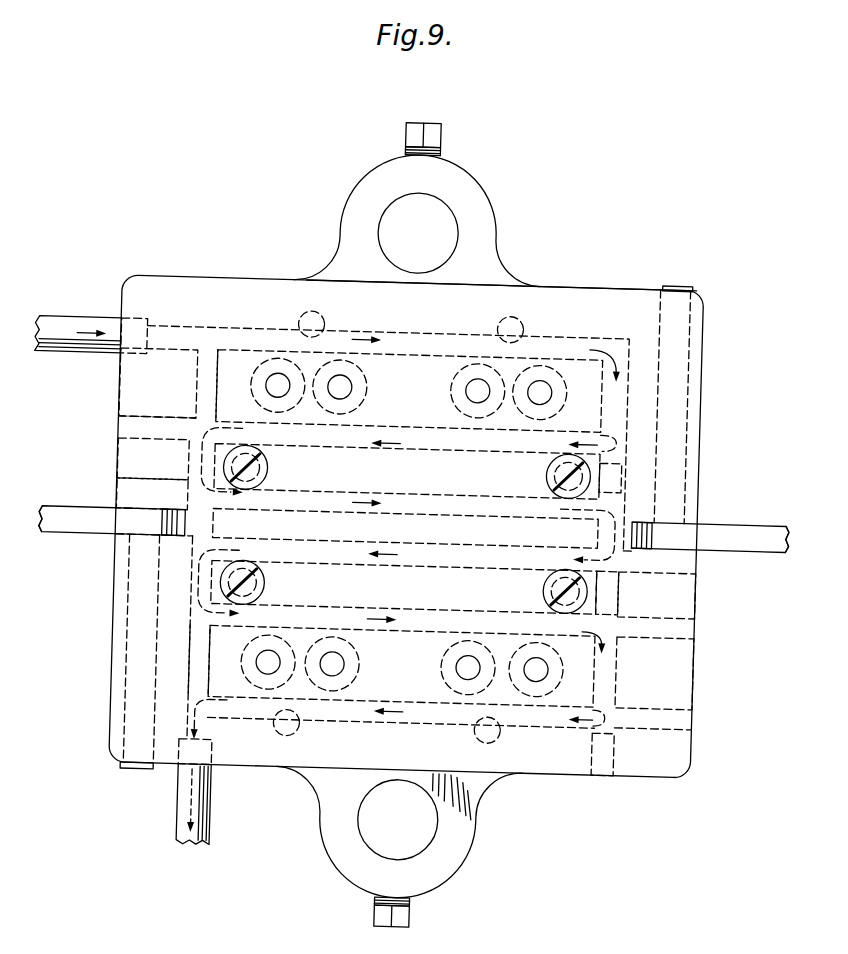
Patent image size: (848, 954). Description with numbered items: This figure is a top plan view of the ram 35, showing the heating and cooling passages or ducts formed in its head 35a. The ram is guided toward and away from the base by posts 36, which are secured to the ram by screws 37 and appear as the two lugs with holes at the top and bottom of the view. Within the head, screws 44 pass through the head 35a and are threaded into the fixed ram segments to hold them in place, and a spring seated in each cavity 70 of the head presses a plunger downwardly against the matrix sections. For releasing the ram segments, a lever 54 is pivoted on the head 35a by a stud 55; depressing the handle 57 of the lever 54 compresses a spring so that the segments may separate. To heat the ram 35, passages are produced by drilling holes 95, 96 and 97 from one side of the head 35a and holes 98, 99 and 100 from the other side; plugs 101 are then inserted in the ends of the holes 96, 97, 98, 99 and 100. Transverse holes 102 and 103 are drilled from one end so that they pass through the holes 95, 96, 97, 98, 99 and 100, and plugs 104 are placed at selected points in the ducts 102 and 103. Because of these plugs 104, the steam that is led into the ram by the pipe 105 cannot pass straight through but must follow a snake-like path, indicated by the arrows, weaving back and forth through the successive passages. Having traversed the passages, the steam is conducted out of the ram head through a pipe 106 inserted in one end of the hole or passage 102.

The ram 35 is at (258, 240).
The ram head 35a is at (573, 295).
The post 36 is at (418, 215).
The screw 37 is at (425, 132).
The screw 44 is at (268, 474).
The lever 54 is at (67, 502).
The stud 55 is at (684, 289).
The handle 57 is at (76, 520).
The cavity 70 is at (354, 393).
The hole 95 is at (425, 338).
The hole 96 is at (446, 434).
The hole 97 is at (466, 499).
The hole 98 is at (421, 566).
The hole 99 is at (440, 632).
The hole 100 is at (463, 722).
The plug 101 is at (135, 480).
The transverse hole 102 is at (190, 570).
The transverse hole 103 is at (617, 522).
The plug 104 is at (200, 382).
The pipe 105 is at (66, 320).
The pipe 106 is at (184, 780).